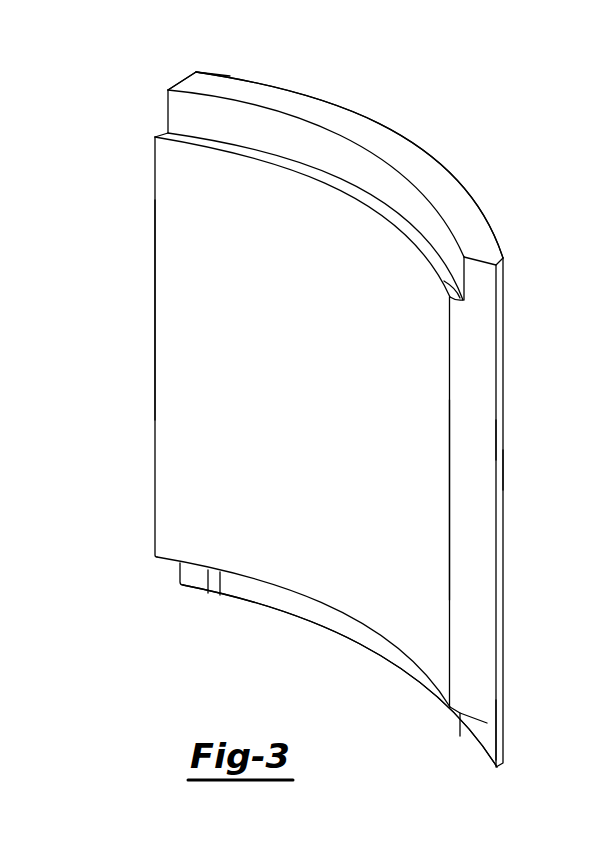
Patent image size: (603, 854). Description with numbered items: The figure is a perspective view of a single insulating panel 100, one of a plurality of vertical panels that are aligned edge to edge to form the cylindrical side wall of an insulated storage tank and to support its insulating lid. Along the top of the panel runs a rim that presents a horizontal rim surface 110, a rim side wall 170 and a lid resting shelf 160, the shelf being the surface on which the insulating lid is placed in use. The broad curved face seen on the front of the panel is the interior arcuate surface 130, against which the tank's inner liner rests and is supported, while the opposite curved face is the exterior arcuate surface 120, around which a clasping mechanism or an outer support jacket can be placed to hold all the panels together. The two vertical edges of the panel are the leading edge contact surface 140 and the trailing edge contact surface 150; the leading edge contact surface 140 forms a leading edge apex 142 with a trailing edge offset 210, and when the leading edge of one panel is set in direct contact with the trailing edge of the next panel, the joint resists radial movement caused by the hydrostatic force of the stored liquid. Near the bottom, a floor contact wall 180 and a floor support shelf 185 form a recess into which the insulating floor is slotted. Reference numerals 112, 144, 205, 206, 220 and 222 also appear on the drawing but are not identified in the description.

The insulating panel 100 is at (510, 537).
The horizontal rim surface 110 is at (370, 132).
The lower flange 112 is at (388, 660).
The exterior arcuate surface 120 is at (430, 157).
The interior arcuate surface 130 is at (195, 393).
The leading edge contact surface 140 is at (478, 352).
The leading edge apex 142 is at (497, 473).
The lower end of side flange 144 is at (450, 590).
The trailing edge contact surface 150 is at (155, 312).
The lid resting shelf 160 is at (287, 162).
The rim side wall 170 is at (193, 113).
The floor contact wall 180 is at (327, 612).
The floor support shelf 185 is at (273, 583).
The end of upper flange 205 is at (481, 259).
The upper corner 206 is at (183, 80).
The trailing edge offset 210 is at (498, 443).
The left corner of flange 220 is at (155, 137).
The lip of upper flange 222 is at (441, 280).